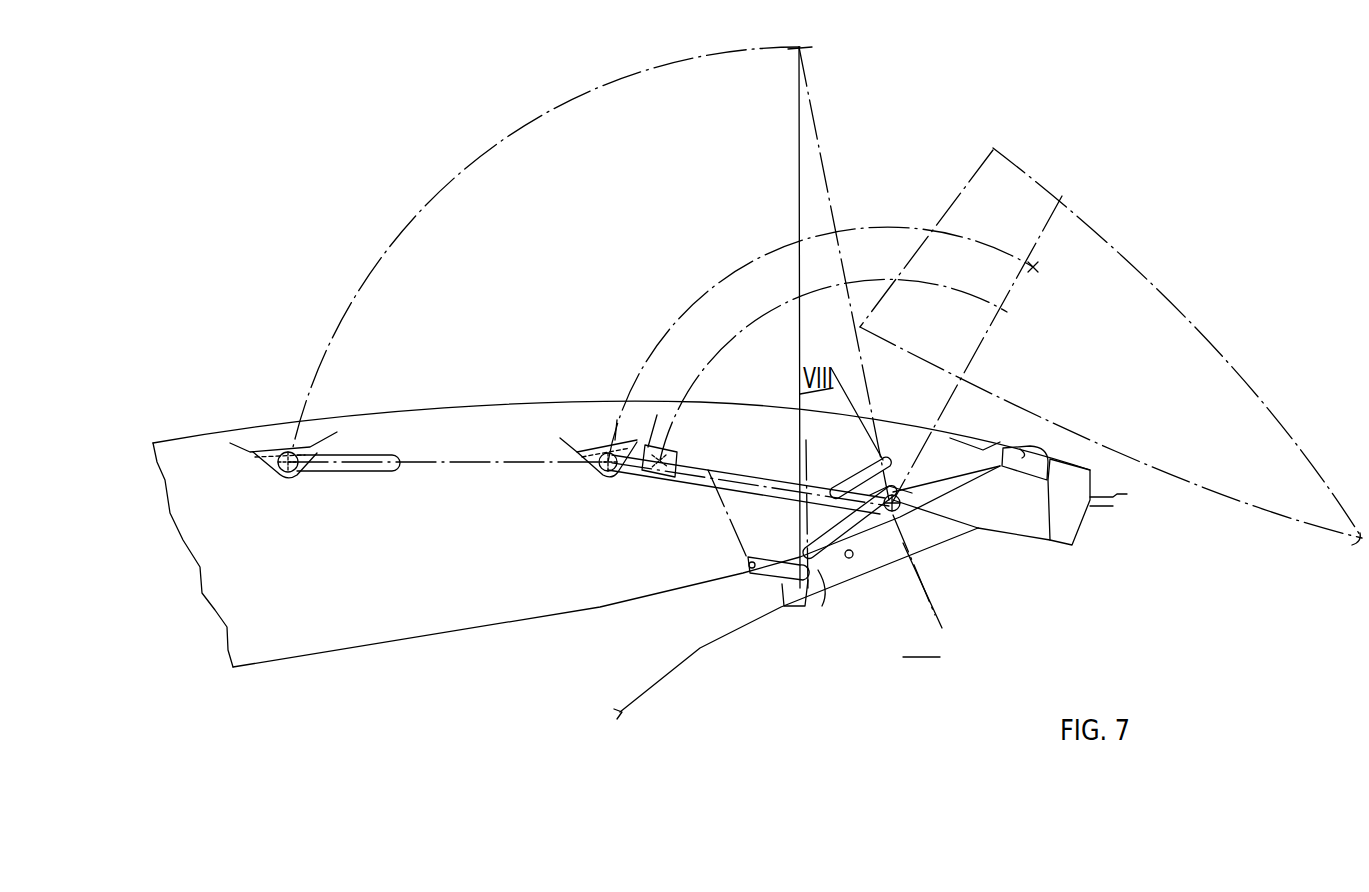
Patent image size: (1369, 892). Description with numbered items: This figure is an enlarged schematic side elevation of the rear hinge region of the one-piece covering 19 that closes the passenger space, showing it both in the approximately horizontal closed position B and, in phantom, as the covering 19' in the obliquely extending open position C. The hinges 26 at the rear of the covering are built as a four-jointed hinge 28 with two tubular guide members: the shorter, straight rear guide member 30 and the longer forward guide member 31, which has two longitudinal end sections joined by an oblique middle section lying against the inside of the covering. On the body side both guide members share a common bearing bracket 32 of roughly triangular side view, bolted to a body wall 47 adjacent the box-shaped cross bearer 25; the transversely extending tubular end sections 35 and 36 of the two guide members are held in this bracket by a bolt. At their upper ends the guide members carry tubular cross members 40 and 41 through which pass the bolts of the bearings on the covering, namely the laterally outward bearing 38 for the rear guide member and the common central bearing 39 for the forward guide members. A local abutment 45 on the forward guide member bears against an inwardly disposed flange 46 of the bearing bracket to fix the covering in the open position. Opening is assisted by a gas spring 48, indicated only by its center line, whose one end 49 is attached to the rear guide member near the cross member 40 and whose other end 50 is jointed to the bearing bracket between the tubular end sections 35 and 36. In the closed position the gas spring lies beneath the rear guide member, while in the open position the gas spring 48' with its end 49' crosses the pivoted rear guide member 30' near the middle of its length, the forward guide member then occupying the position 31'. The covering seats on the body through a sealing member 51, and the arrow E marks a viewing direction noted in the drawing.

The covering 19 is at (621, 495).
The covering in open position 19' is at (1111, 347).
The box-shaped cross bearer 25 is at (1092, 468).
The hinges 26 is at (678, 497).
The four-jointed hinge 28 is at (505, 466).
The rear guide member 30 is at (797, 319).
The rear guide member in open position 30' is at (977, 349).
The forward guide member 31 is at (553, 537).
The forward guide member in open position 31' is at (844, 273).
The bearing bracket 32 is at (933, 548).
The tubular end section 35 is at (905, 497).
The tubular end section 36 is at (820, 590).
The bearing 38 is at (578, 465).
The common bearing 39 is at (270, 448).
The tubular cross member 40 is at (607, 474).
The tubular cross member 41 is at (285, 470).
The abutment 45 is at (852, 480).
The flange 46 is at (870, 540).
The body wall 47 is at (757, 630).
The gas spring 48 is at (722, 517).
The gas spring in open position 48' is at (1023, 372).
The gas spring end 49 is at (683, 441).
The gas spring end in open position 49' is at (1048, 301).
The gas spring end 50 is at (849, 559).
The sealing member 51 is at (1042, 453).
The closed position B is at (418, 400).
The open position C is at (1165, 285).
The direction arrow E is at (1200, 632).